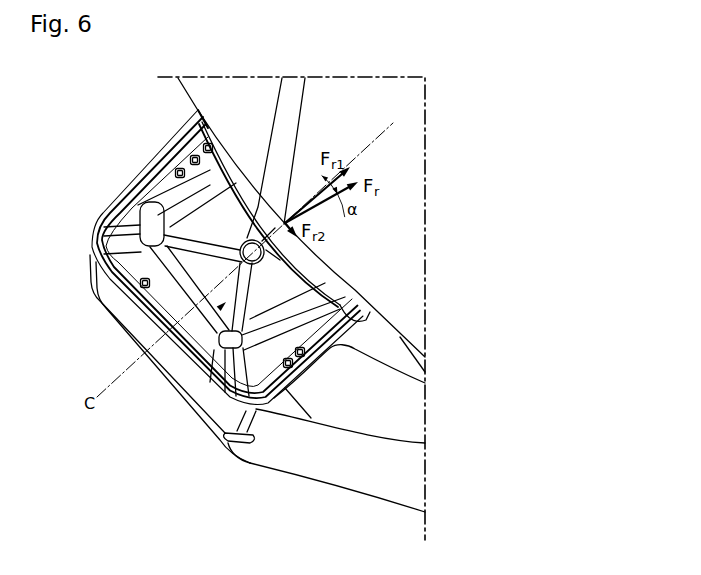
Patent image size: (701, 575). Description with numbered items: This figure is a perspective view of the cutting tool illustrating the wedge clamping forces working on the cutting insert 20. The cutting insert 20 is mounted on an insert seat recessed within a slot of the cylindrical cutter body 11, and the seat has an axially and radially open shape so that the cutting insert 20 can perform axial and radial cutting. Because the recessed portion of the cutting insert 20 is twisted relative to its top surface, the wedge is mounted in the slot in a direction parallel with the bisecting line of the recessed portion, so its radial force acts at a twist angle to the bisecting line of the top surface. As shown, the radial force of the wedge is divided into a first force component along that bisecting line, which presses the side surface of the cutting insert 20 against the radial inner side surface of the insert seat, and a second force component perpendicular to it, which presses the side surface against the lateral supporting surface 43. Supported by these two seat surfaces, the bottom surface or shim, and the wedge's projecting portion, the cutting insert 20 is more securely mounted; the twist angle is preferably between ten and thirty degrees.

The cutter body 11 is at (409, 238).
The cutting insert 20 is at (190, 358).
The lateral supporting surface 43 is at (423, 383).